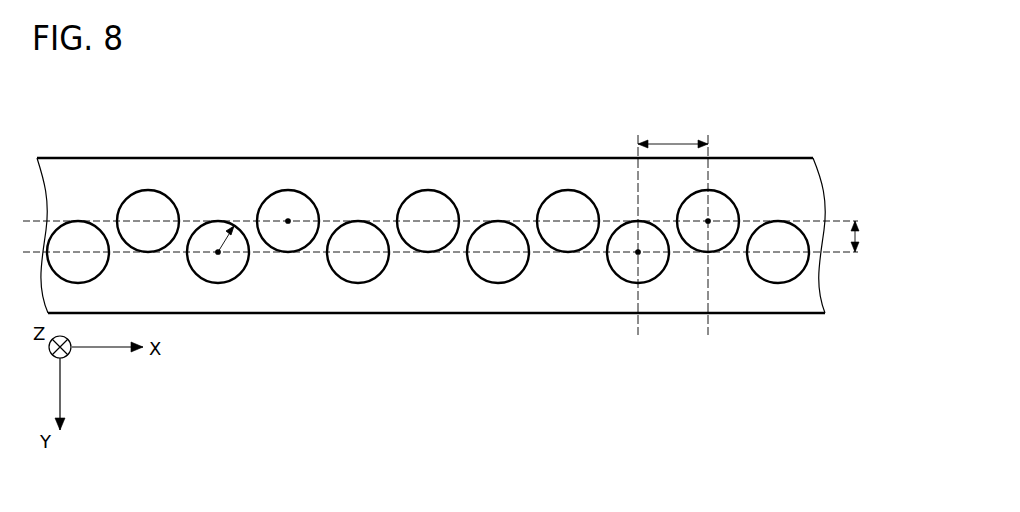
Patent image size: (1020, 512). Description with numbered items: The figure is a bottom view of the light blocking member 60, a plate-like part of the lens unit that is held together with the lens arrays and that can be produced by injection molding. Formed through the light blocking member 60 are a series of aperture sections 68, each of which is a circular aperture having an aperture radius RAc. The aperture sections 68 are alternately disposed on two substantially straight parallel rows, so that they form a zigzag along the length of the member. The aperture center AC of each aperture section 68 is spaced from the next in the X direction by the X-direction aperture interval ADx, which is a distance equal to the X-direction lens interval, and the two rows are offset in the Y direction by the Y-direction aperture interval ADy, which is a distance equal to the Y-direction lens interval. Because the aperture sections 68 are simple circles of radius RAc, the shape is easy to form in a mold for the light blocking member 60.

The light blocking member 60 is at (80, 143).
The aperture section 68 is at (288, 221).
The aperture center AC is at (708, 221).
The aperture radius RAc is at (218, 252).
The X-direction aperture interval ADx is at (670, 141).
The Y-direction aperture interval ADy is at (857, 244).